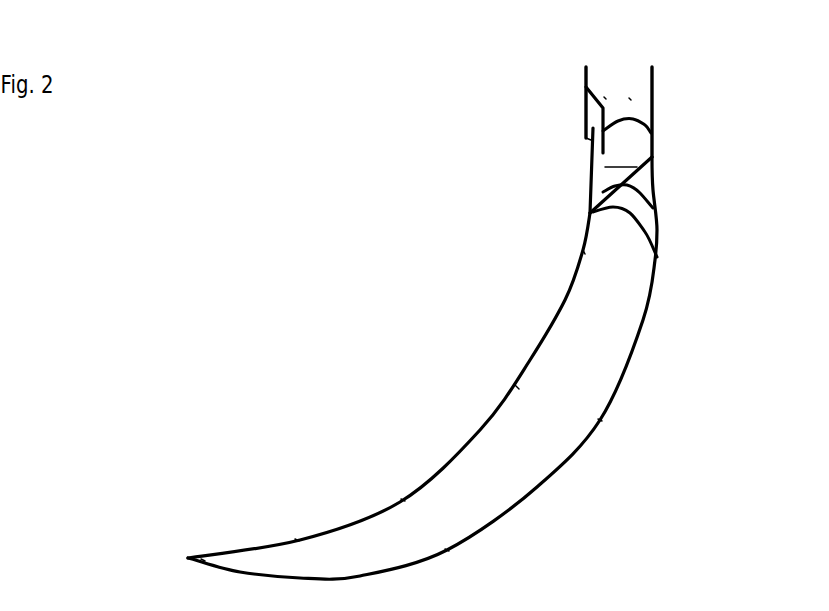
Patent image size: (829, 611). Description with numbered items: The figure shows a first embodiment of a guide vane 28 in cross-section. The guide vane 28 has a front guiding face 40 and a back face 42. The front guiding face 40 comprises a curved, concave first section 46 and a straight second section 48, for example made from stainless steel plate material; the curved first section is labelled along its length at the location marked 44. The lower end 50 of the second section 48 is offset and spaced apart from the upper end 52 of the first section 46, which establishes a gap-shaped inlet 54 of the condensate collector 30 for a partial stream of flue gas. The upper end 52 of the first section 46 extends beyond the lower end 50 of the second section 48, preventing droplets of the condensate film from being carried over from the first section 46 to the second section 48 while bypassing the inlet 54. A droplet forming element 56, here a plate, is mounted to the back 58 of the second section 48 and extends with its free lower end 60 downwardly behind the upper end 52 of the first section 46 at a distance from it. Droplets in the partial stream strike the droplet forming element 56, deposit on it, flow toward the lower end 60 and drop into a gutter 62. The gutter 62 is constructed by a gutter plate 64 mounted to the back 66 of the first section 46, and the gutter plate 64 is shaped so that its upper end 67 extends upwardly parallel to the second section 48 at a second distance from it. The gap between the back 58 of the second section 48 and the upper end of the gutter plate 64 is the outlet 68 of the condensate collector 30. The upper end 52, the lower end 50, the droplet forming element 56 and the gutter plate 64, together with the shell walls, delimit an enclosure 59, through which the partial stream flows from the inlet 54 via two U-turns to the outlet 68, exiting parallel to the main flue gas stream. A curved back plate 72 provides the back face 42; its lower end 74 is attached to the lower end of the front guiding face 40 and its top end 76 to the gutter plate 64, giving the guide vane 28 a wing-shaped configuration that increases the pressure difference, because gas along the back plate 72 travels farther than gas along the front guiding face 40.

The guide vane 28 is at (335, 278).
The condensate collector 30 is at (670, 127).
The front guiding face 40 is at (297, 540).
The back face 42 is at (447, 550).
The suction side 44 is at (403, 500).
The first section 46 is at (517, 387).
The second section 48 is at (586, 88).
The lower end of the second section 50 is at (586, 130).
The upper end of the first section 52 is at (590, 148).
The inlet 54 is at (581, 147).
The droplet forming element 56 is at (603, 98).
The back of the second section 58 is at (587, 80).
The enclosure 59 is at (621, 152).
The free lower end of the droplet forming element 60 is at (651, 133).
The gutter 62 is at (656, 210).
The gutter plate 64 is at (657, 257).
The back of the first section 66 is at (583, 253).
The upper end of the gutter plate 67 is at (652, 100).
The outlet 68 is at (632, 92).
The back plate 72 is at (600, 420).
The lower end of the back plate 74 is at (203, 560).
The top end of the back plate 76 is at (652, 163).